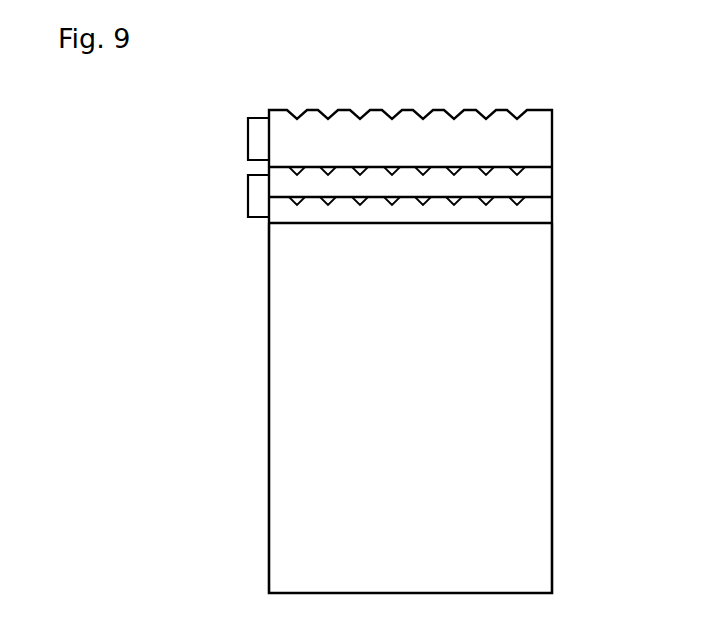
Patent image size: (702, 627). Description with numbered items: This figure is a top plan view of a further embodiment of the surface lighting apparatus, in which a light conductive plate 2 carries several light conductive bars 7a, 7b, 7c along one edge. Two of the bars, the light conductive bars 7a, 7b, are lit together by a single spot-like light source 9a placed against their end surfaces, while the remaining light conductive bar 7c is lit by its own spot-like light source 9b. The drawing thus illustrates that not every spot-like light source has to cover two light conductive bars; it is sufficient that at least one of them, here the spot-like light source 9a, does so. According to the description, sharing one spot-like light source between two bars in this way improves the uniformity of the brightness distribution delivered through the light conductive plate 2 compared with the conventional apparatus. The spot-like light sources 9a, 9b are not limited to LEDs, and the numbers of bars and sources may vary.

The light conductive plate 2 is at (527, 365).
The light conductive bar 7a is at (537, 182).
The light conductive bar 7b is at (533, 208).
The light conductive bar 7c is at (528, 140).
The spot-like light source 9a is at (257, 198).
The spot-like light source 9b is at (257, 143).